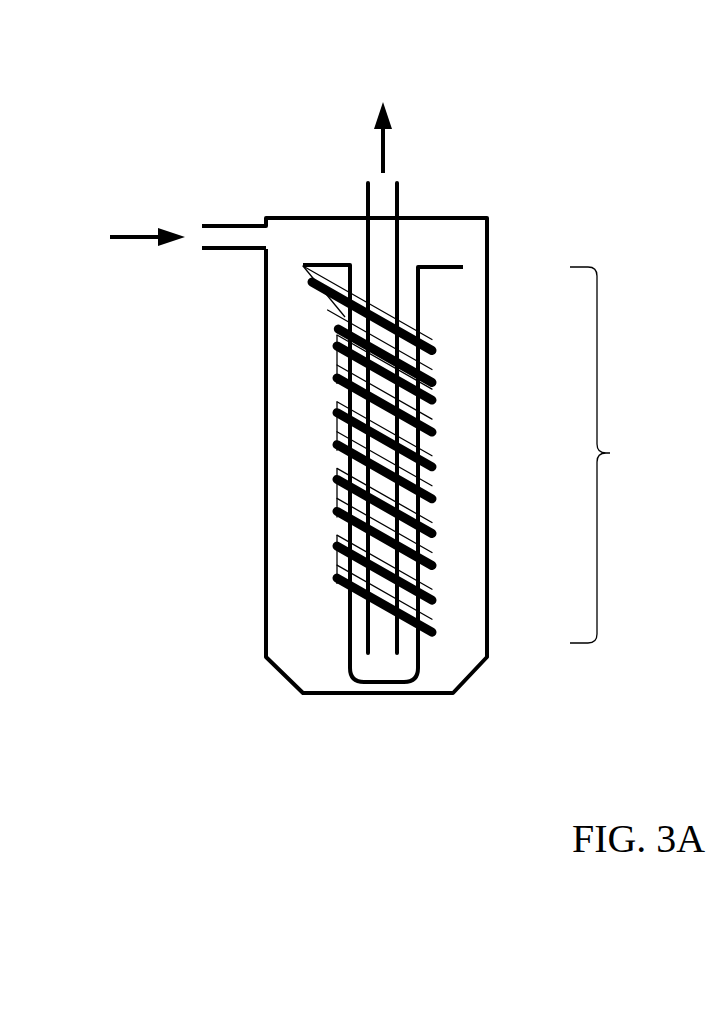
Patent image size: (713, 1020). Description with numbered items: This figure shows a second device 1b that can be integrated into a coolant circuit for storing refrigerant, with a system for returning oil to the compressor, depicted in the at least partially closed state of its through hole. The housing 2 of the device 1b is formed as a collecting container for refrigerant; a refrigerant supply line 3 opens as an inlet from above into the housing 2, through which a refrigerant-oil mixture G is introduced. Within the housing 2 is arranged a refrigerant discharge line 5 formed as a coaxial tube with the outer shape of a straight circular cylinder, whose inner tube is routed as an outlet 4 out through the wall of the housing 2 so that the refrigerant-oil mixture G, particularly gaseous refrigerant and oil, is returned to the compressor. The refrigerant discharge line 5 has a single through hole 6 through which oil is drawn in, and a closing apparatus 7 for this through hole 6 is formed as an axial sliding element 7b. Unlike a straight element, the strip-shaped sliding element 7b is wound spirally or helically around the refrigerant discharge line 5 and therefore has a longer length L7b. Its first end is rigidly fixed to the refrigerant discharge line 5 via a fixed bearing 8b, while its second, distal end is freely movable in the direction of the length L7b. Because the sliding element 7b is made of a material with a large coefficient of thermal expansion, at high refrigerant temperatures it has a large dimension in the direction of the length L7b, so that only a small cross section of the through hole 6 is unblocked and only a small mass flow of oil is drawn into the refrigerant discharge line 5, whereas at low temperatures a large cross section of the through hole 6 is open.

The device 1b is at (382, 381).
The housing 2 is at (490, 243).
The refrigerant supply line 3 is at (230, 222).
The outlet 4 is at (400, 192).
The refrigerant discharge line 5 is at (355, 628).
The through hole 6 is at (413, 645).
The closing apparatus 7 is at (375, 449).
The axial sliding element 7b is at (432, 468).
The fixed bearing 8b is at (290, 281).
The refrigerant-oil mixture G is at (165, 225).
The length of sliding element L7b is at (612, 455).